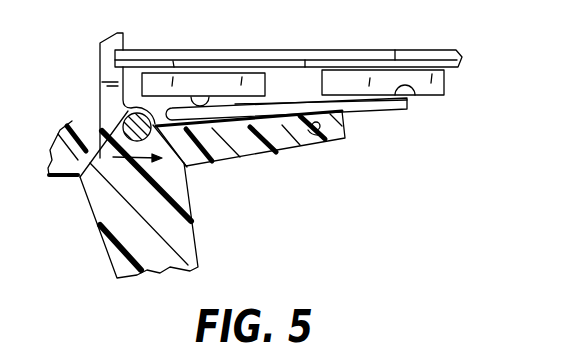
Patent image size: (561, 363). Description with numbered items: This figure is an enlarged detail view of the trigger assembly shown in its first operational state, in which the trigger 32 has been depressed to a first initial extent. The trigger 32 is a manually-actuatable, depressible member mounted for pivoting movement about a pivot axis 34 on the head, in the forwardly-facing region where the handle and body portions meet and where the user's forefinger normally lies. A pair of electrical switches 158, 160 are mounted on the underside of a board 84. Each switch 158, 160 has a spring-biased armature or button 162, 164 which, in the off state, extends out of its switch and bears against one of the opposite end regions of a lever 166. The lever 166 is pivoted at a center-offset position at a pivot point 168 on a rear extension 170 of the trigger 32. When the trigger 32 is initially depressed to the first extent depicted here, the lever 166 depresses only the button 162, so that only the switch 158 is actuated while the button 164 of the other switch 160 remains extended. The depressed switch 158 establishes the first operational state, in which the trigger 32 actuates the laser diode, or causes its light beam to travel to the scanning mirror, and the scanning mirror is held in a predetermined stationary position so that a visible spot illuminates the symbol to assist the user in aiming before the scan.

The trigger 32 is at (122, 256).
The pivot axis 34 is at (126, 119).
The board 84 is at (367, 49).
The electrical switch 158 is at (432, 98).
The electrical switch 160 is at (171, 92).
The button 162 is at (413, 103).
The button 164 is at (203, 97).
The lever 166 is at (260, 117).
The pivot point 168 is at (321, 141).
The rear extension 170 is at (207, 163).